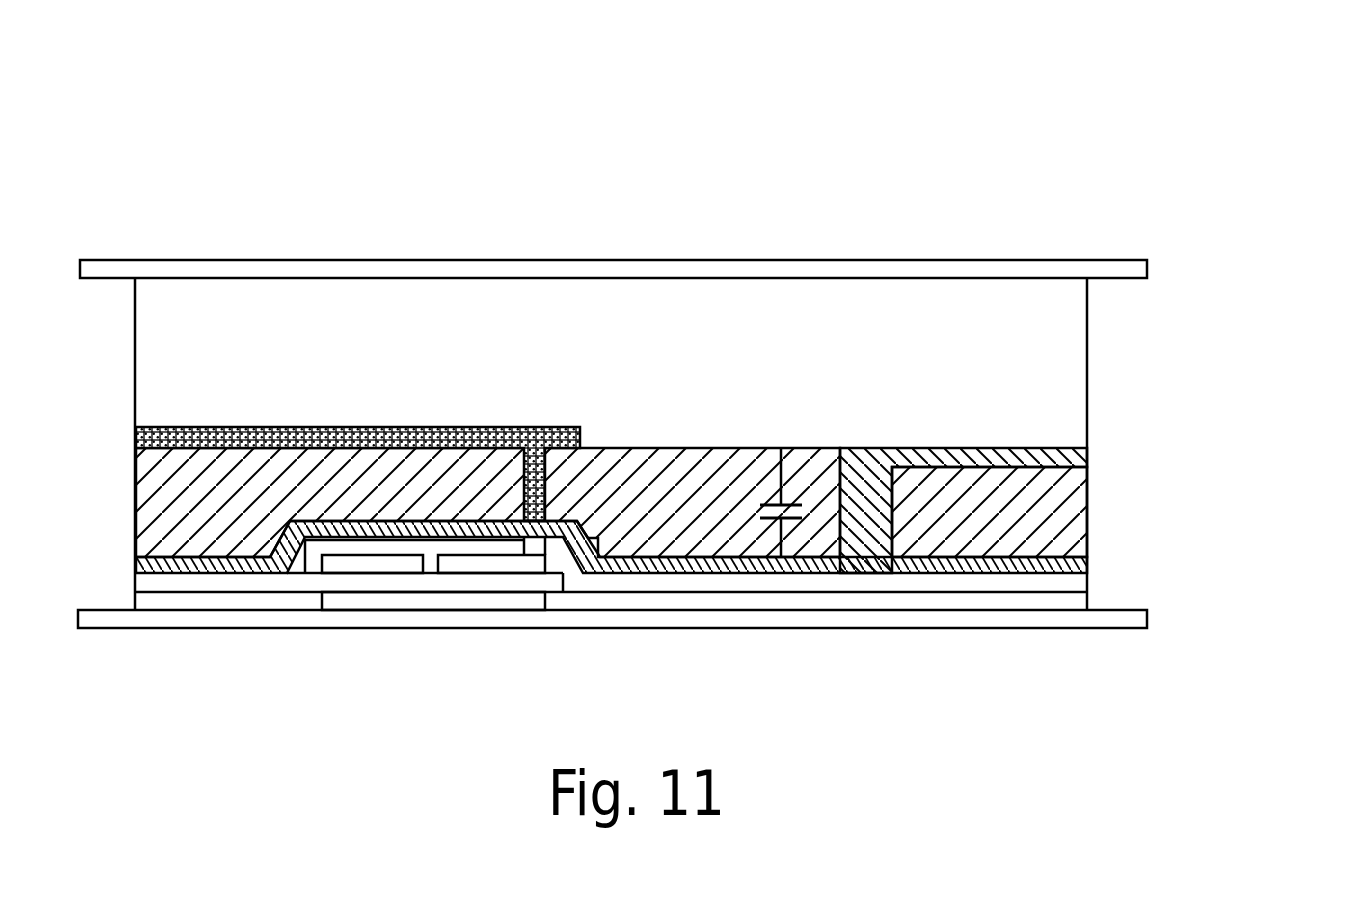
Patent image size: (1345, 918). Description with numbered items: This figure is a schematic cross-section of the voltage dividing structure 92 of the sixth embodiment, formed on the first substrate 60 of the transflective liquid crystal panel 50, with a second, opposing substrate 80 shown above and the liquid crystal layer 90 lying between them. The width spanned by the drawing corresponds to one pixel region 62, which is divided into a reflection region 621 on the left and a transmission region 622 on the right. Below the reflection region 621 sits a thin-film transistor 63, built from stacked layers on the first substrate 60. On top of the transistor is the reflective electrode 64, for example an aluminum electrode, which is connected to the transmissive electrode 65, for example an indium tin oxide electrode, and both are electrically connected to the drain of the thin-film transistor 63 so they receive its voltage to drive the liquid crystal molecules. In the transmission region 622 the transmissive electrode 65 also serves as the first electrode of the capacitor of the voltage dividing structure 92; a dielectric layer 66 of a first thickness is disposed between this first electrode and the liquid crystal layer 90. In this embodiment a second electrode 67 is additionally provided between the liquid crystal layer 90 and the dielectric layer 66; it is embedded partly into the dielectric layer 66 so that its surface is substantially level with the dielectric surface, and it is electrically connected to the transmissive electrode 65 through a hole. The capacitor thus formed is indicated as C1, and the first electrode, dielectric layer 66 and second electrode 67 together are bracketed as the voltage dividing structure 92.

The transflective liquid crystal panel 50 is at (1153, 150).
The first substrate 60 is at (1147, 622).
The pixel region 62 is at (1087, 253).
The reflection region 621 is at (612, 250).
The transmission region 622 is at (1087, 196).
The thin-film transistor 63 is at (273, 658).
The reflective electrode 64 is at (136, 432).
The transmissive electrode 65 is at (1087, 568).
The dielectric layer 66 is at (1087, 505).
The second electrode 67 is at (1087, 458).
The second substrate 80 is at (1147, 268).
The liquid crystal layer 90 is at (1087, 375).
The voltage dividing structure 92 is at (1218, 383).
The storage capacitor C1 is at (759, 502).